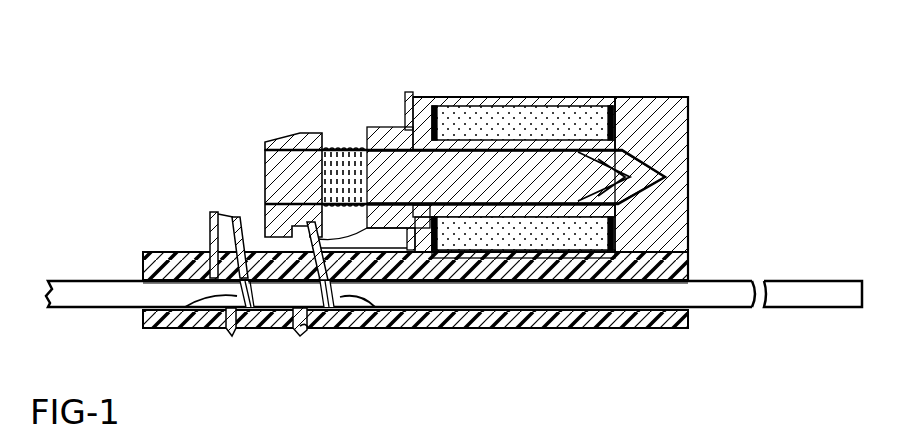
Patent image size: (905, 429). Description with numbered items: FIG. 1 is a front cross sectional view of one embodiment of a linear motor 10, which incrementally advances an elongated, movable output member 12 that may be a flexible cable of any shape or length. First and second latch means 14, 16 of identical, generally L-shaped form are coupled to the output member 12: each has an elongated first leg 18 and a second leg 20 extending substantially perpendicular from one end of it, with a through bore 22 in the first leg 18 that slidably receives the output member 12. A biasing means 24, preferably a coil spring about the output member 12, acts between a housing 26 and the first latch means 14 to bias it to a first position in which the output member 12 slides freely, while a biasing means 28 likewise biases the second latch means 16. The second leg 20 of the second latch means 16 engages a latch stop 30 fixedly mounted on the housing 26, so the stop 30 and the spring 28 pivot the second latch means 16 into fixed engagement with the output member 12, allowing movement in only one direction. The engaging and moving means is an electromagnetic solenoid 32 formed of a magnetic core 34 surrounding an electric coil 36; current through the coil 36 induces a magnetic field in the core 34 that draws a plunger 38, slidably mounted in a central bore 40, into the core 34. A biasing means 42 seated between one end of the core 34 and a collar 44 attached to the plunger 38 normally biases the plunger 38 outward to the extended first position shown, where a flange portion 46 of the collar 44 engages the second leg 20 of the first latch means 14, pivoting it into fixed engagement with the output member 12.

The linear motor 10 is at (352, 8).
The output member 12 is at (705, 288).
The first latch means 14 is at (320, 326).
The second latch means 16 is at (250, 340).
The first leg 18 is at (340, 246).
The second leg 20 is at (265, 175).
The through bore 22 is at (300, 332).
The biasing means 24 is at (375, 308).
The housing 26 is at (567, 320).
The biasing means 28 is at (185, 308).
The latch stop 30 is at (207, 220).
The electromagnetic solenoid 32 is at (556, 50).
The magnetic core 34 is at (690, 136).
The electric coil 36 is at (450, 112).
The plunger 38 is at (384, 146).
The bore 40 is at (565, 152).
The biasing means 42 is at (343, 143).
The collar 44 is at (293, 135).
The flange portion 46 is at (315, 240).